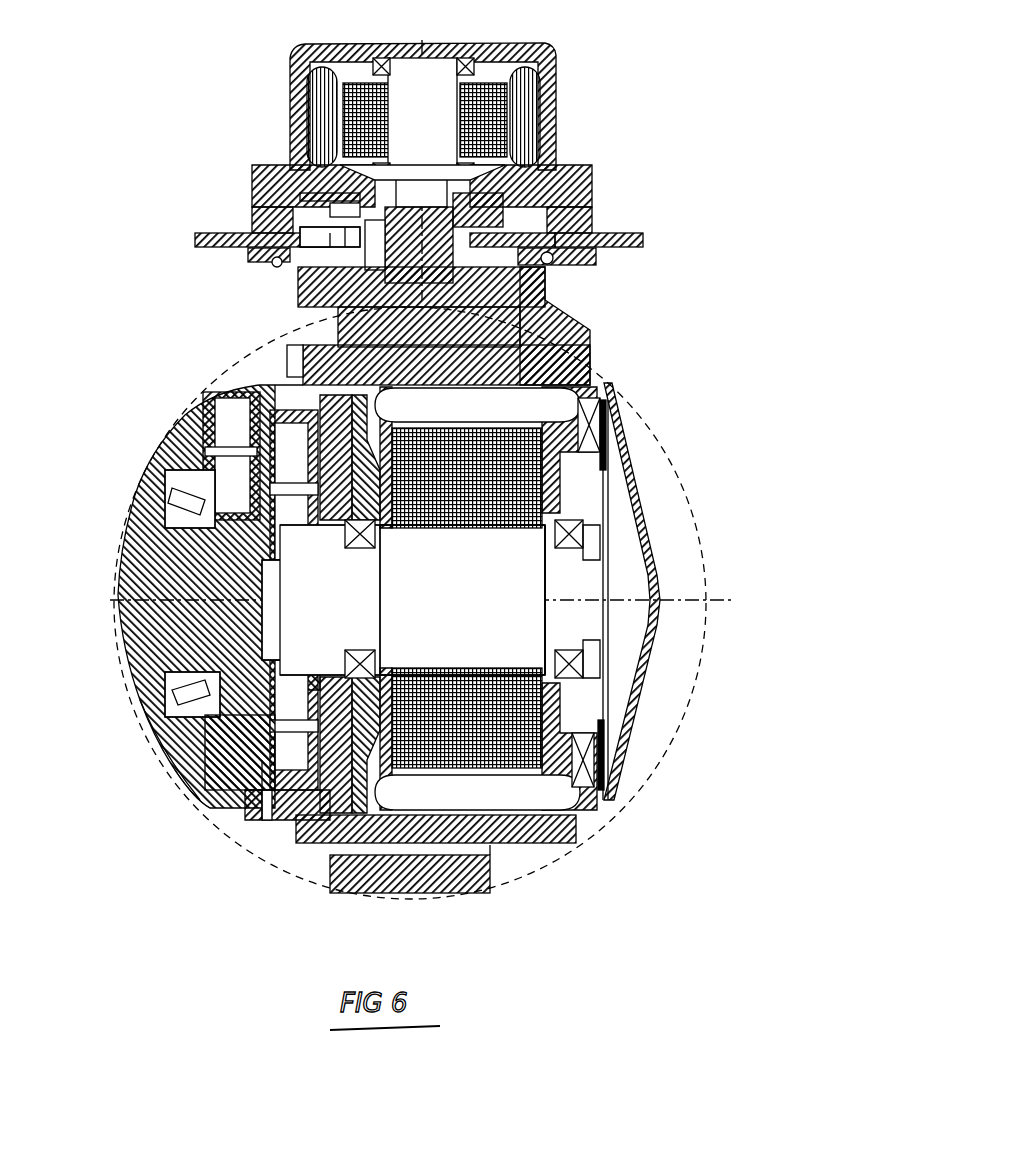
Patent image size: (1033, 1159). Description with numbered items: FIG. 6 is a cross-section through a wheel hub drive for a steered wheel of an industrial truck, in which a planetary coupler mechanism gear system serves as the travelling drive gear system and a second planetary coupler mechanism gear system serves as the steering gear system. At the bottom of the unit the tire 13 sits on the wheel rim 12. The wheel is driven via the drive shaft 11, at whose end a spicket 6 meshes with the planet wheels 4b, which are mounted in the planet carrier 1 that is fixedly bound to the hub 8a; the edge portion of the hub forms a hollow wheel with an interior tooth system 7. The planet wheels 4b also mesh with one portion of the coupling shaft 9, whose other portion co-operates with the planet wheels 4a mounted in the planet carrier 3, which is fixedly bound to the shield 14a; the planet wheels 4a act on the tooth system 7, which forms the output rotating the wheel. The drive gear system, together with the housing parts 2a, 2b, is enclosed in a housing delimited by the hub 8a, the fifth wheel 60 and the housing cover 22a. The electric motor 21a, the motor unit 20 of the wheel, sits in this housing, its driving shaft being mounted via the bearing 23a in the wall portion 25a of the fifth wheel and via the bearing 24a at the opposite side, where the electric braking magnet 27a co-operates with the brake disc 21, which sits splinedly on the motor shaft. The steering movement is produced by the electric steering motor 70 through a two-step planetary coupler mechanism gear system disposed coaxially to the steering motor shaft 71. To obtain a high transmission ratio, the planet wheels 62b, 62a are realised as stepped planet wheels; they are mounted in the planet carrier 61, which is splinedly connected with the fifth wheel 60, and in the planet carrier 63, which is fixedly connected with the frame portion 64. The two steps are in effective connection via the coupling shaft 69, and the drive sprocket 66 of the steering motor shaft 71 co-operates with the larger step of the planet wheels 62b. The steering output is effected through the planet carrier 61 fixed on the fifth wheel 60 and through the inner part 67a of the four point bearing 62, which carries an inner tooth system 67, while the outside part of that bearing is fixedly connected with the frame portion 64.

The planet carrier 1 is at (180, 603).
The housing part 2a is at (215, 750).
The housing part 2b is at (266, 805).
The planet carrier 3 is at (210, 752).
The planet wheels 4a is at (230, 418).
The planet wheels 4b is at (290, 443).
The spicket 6 is at (178, 552).
The interior tooth system 7 is at (215, 800).
The hub 8a is at (180, 548).
The coupling shaft 9 is at (255, 810).
The drive shaft 11 is at (556, 603).
The wheel rim 12 is at (297, 847).
The tire 13 is at (470, 882).
The shield 14a is at (267, 813).
The electric motor 20 is at (518, 730).
The brake disc 21 is at (598, 752).
The electric motor 21a is at (478, 648).
The housing cover 22a is at (650, 520).
The bearing 23a is at (200, 690).
The bearing 24a is at (590, 668).
The wall portion 25a is at (340, 887).
The electric braking magnet 27a is at (590, 423).
The fifth wheel 60 is at (557, 322).
The planet carrier 61 is at (592, 180).
The four point bearing 62 is at (568, 260).
The planet wheels 62a is at (325, 240).
The planet wheels 62b is at (320, 202).
The planet carrier 63 is at (558, 227).
The frame portion 64 is at (593, 240).
The drive sprocket 66 is at (523, 167).
The inner tooth system 67 is at (523, 257).
The inner part 67a is at (272, 272).
The coupling shaft 69 is at (515, 213).
The steering motor 70 is at (495, 110).
The steering motor shaft 71 is at (440, 88).